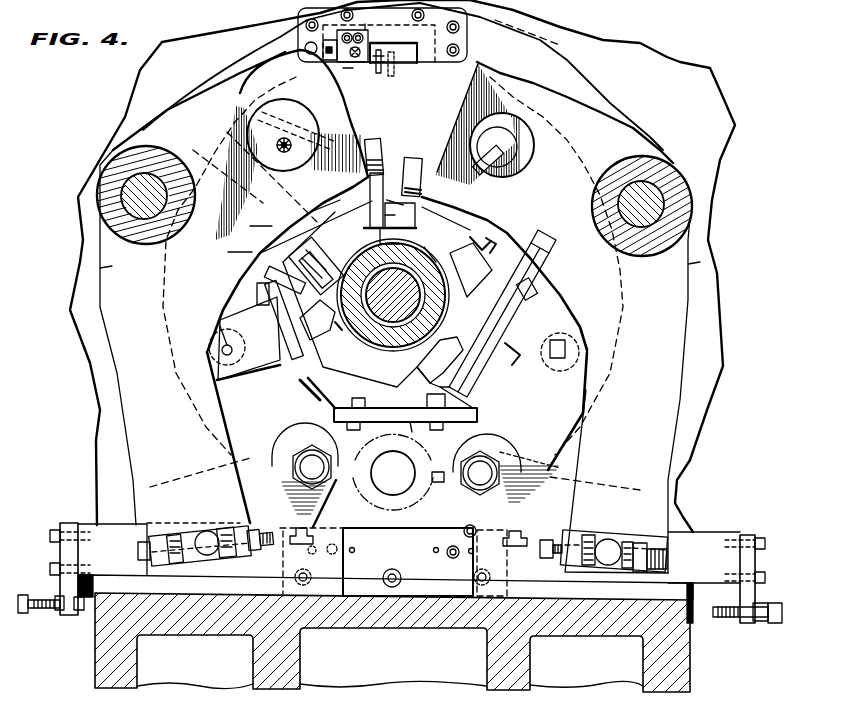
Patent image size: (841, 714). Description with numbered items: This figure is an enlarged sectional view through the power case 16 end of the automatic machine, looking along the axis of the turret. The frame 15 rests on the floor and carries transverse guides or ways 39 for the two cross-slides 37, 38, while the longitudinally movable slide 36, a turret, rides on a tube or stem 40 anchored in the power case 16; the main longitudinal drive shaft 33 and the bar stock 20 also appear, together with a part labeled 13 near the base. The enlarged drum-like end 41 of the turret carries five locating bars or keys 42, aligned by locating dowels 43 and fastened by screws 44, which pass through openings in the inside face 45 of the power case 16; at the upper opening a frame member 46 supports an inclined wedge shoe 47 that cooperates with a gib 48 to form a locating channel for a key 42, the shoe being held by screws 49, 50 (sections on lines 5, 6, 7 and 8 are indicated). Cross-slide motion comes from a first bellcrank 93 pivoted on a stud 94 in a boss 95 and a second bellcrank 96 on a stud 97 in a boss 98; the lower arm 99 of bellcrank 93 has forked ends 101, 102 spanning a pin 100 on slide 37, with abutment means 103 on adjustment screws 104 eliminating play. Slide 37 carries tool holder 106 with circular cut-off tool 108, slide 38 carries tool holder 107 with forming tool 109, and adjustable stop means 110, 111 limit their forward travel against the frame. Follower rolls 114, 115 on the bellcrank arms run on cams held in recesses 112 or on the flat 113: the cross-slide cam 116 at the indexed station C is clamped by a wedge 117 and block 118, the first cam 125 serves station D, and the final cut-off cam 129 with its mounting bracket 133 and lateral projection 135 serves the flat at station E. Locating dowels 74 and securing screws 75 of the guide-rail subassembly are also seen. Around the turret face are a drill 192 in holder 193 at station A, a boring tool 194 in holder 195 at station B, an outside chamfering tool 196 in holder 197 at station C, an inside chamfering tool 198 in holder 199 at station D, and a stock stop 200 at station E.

The section line 5- 5 is at (555, 19).
The section line 6- 6 is at (377, 131).
The section line 7- 7 is at (247, 259).
The section line 8- 8 is at (262, 234).
The lower slide block 13 is at (360, 534).
The frame 15 is at (362, 632).
The power case 16 is at (680, 72).
The stock 20 is at (404, 522).
The main longitudinal drive shaft 33 is at (440, 318).
The longitudinally movable slide 36 is at (505, 318).
The transversely movable slide 37 is at (710, 540).
The transversely movable slide 38 is at (100, 530).
The transverse guides or ways 39 is at (344, 580).
The tube or stem 40 is at (446, 304).
The drum-like end 41 is at (470, 68).
The locating bar or key 42 is at (393, 76).
The locating dowels 43 is at (230, 178).
The screws 44 is at (376, 76).
The inside face 45 is at (572, 62).
The frame member 46 is at (466, 22).
The wedge shoe 47 is at (370, 32).
The gib 48 is at (323, 40).
The screw 49 is at (314, 58).
The screw 50 is at (352, 64).
The locating dowels 74 is at (460, 538).
The securing screw 75 is at (450, 558).
The first bellcrank 93 is at (700, 262).
The stud 94 is at (656, 198).
The boss 95 is at (668, 168).
The bellcrank 96 is at (100, 268).
The stud 97 is at (128, 178).
The boss 98 is at (156, 152).
The lower arm 99 is at (676, 472).
The pin or stud 100 is at (609, 538).
The forked end 101 is at (568, 568).
The forked end 102 is at (652, 572).
The abutment means 103 is at (586, 538).
The adjustment screws 104 is at (530, 556).
The tool holder 106 is at (550, 466).
The tool holder 107 is at (118, 456).
The circular tool 108 is at (510, 450).
The circular tool 109 is at (290, 434).
The adjustable stop means 110 is at (716, 618).
The adjustable stop means 111 is at (42, 616).
The cam-receiving recesses 112 is at (468, 285).
The flat 113 is at (376, 369).
The follower roll 114 is at (414, 156).
The follower roll 115 is at (374, 162).
The cross-slide cam 116 is at (332, 200).
The wedge 117 is at (390, 200).
The block 118 is at (410, 214).
The first cam 125 is at (257, 284).
The final cut-off cam 129 is at (334, 410).
The mounting flange or bracket 133 is at (318, 356).
The lateral projection 135 is at (304, 398).
The drill 192 is at (304, 140).
The tool holder 193 is at (282, 132).
The boring tool 194 is at (222, 335).
The holder 195 is at (262, 372).
The outside chamfering tool 196 is at (424, 494).
The holder 197 is at (466, 434).
The inside chamfering tool 198 is at (560, 372).
The holder 199 is at (556, 330).
The stock stop 200 is at (522, 162).
The station A is at (313, 211).
The station B is at (270, 326).
The station C is at (417, 431).
The station D is at (496, 360).
The station E is at (333, 316).